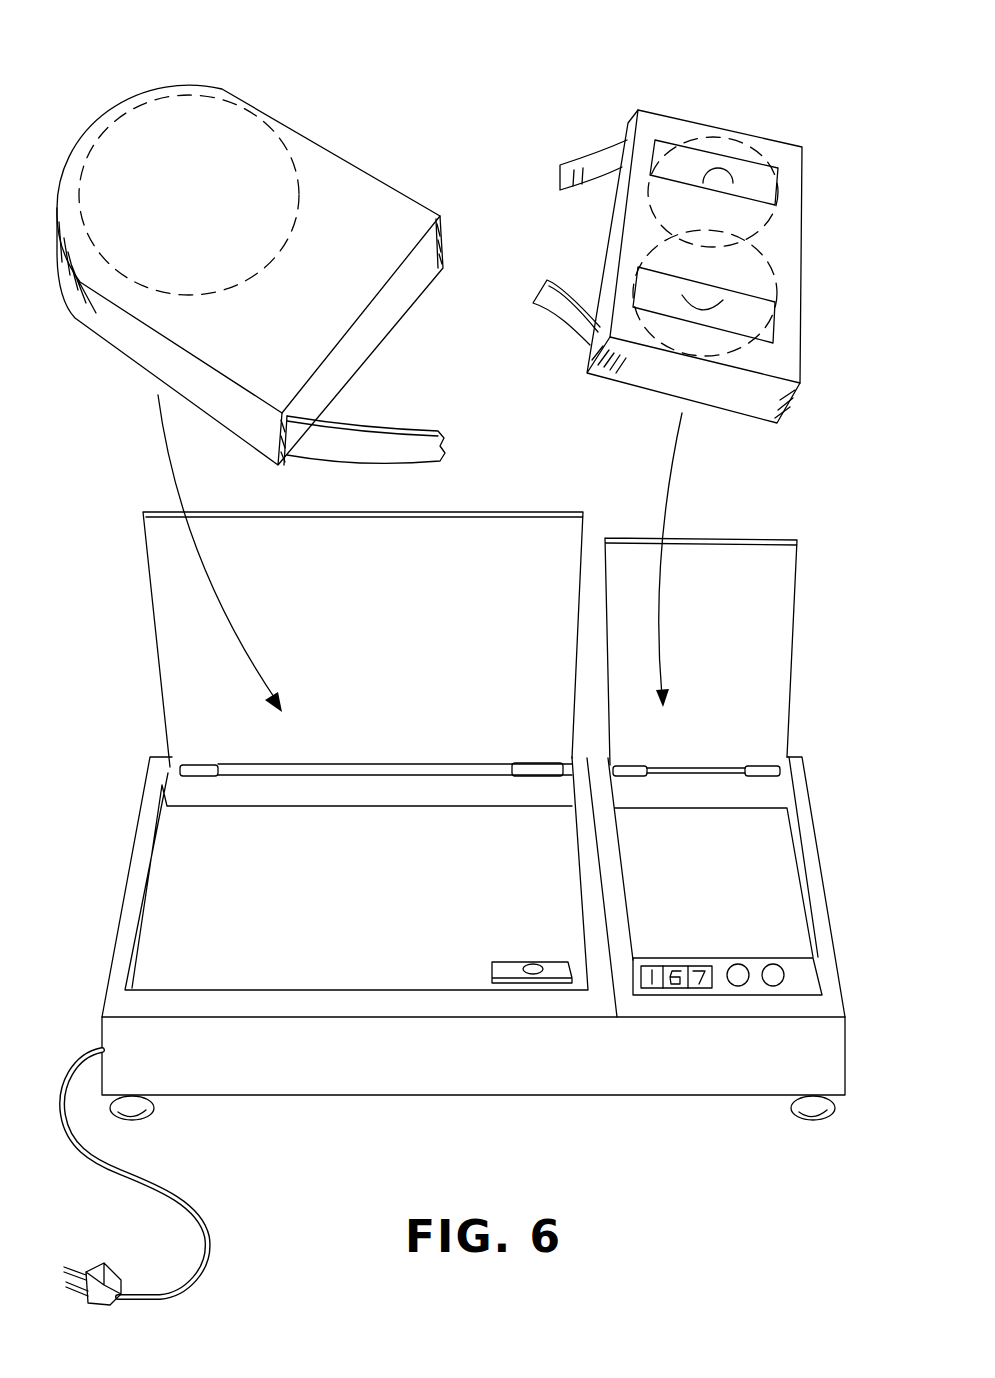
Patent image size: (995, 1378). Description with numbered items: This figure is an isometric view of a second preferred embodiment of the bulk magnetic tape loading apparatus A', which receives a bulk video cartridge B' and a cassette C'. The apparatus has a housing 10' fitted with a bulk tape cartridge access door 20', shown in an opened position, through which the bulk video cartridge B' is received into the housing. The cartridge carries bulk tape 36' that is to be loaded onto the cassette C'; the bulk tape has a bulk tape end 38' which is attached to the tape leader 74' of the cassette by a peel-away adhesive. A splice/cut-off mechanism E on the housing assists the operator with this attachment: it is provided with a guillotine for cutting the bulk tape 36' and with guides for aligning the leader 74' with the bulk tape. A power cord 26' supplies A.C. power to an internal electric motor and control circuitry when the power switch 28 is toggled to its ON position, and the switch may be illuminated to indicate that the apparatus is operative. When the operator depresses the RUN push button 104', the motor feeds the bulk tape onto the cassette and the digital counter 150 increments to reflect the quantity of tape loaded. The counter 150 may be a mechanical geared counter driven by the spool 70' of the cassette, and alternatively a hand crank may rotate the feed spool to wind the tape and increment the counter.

The housing 10' is at (473, 959).
The bulk tape cartridge access door 20' is at (330, 644).
The bulk magnetic tape loading apparatus A' is at (737, 657).
The splice/cut-off mechanism E is at (515, 961).
The digital counter 150 is at (655, 989).
The RUN push button 104' is at (694, 938).
The power switch 28 is at (770, 965).
The power cord 26' is at (182, 1177).
The bulk video cartridge B' is at (250, 235).
The bulk tape 36' is at (252, 177).
The bulk tape end 38' is at (366, 419).
The cassette C' is at (723, 241).
The spool 70' is at (755, 246).
The tape leader 74' is at (566, 273).